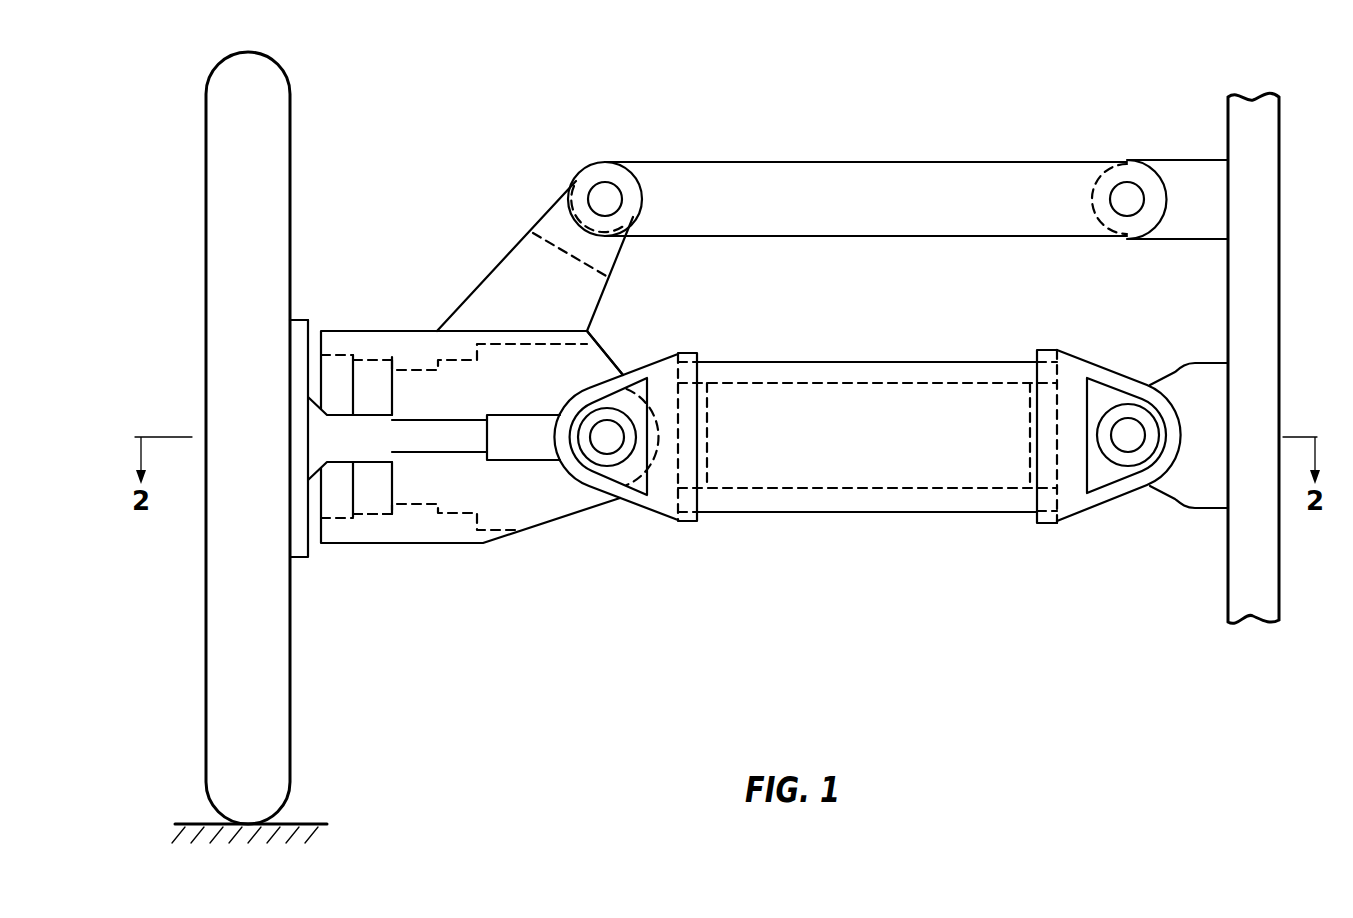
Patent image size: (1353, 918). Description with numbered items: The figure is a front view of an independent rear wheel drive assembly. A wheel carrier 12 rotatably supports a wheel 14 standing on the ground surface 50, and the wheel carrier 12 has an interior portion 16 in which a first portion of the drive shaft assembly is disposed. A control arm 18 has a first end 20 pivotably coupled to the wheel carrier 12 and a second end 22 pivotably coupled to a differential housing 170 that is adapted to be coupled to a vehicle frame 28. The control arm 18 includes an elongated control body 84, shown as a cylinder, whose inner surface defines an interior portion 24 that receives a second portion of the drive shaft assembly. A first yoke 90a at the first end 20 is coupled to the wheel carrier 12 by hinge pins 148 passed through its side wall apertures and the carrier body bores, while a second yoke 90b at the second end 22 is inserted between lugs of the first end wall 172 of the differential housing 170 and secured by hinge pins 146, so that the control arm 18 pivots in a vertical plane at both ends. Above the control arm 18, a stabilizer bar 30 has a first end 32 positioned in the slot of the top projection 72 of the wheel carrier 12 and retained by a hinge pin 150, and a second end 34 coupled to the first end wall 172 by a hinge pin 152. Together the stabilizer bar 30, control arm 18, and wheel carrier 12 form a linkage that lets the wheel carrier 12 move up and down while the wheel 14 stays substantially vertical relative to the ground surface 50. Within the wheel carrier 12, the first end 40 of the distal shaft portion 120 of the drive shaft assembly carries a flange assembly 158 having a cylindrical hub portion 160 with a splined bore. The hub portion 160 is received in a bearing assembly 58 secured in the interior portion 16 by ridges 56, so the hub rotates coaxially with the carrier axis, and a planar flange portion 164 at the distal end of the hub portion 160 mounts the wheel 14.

The wheel carrier 12 is at (355, 576).
The wheel 14 is at (268, 162).
The interior portion 16 is at (417, 477).
The control arm 18 is at (770, 547).
The first end 20 is at (663, 338).
The second end 22 is at (1102, 340).
The interior portion 24 is at (845, 468).
The vehicle frame 28 is at (587, 372).
The stabilizer bar 30 is at (901, 146).
The first end 32 is at (696, 145).
The second end 34 is at (1120, 148).
The first end 40 is at (422, 462).
The ground surface 50 is at (310, 824).
The ridges 56 is at (380, 517).
The bearing assembly 58 is at (352, 388).
The top projection 72 is at (508, 283).
The control body 84 is at (757, 365).
The first yoke 90a is at (665, 497).
The second yoke 90b is at (1073, 497).
The distal shaft portion 120 is at (470, 440).
The hinge pin 146 is at (1128, 433).
The hinge pin 148 is at (607, 437).
The hinge pin 150 is at (605, 200).
The hinge pin 152 is at (1125, 198).
The flange assembly 158 is at (303, 297).
The hub portion 160 is at (378, 433).
The flange portion 164 is at (300, 553).
The differential housing 170 is at (1240, 64).
The first end wall 172 is at (1245, 582).